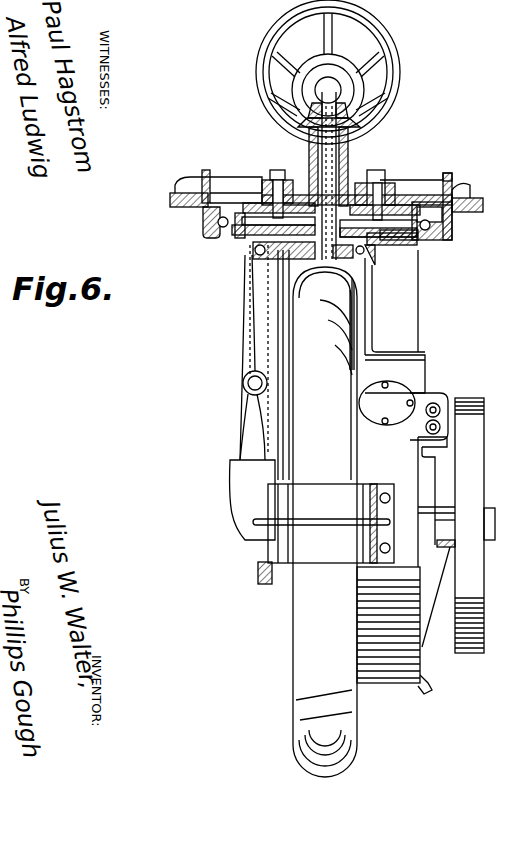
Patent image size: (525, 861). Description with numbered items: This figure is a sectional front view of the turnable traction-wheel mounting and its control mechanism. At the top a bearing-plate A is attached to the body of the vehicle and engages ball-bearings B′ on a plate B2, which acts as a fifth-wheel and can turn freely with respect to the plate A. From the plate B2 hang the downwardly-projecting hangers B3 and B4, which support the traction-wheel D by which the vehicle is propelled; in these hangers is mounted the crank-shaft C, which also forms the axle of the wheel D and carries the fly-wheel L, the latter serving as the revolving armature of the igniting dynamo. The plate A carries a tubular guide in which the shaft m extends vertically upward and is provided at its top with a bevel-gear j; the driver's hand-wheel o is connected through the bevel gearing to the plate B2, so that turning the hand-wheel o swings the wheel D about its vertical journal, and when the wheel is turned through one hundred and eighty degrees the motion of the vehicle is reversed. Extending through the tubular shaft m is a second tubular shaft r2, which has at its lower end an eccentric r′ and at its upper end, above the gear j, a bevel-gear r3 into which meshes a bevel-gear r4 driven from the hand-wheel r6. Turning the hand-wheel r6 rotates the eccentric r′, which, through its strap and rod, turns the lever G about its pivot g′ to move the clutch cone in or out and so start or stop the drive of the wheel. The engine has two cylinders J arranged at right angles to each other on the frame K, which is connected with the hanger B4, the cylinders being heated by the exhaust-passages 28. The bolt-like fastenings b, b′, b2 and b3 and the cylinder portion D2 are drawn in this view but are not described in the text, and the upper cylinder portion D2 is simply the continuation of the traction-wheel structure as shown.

The hand-wheel r6 is at (357, 38).
The hand-wheel o is at (352, 52).
The bevel-gear r4 is at (343, 83).
The bevel-gear r3 is at (345, 105).
The bevel-gear j is at (388, 114).
The shaft m is at (349, 158).
The tubular shaft r2 is at (329, 153).
The eccentric r′ is at (362, 252).
The bearing-plate A is at (470, 197).
The bolt b′ is at (262, 205).
The bolt b is at (300, 190).
The bolt b2 is at (398, 212).
The bolt b3 is at (447, 187).
The ball-bearings B′ is at (203, 230).
The plate B2 is at (232, 240).
The cylinder upper part D2 is at (325, 373).
The traction-wheel D is at (308, 628).
The hanger B4 is at (400, 325).
The cylinder J is at (403, 410).
The hanger B3 is at (258, 331).
The pivot g′ is at (248, 383).
The lever G is at (248, 412).
The frame K is at (342, 589).
The fly-wheel L is at (469, 525).
The crank-shaft C is at (495, 524).
The exhaust-passages 28 is at (425, 487).